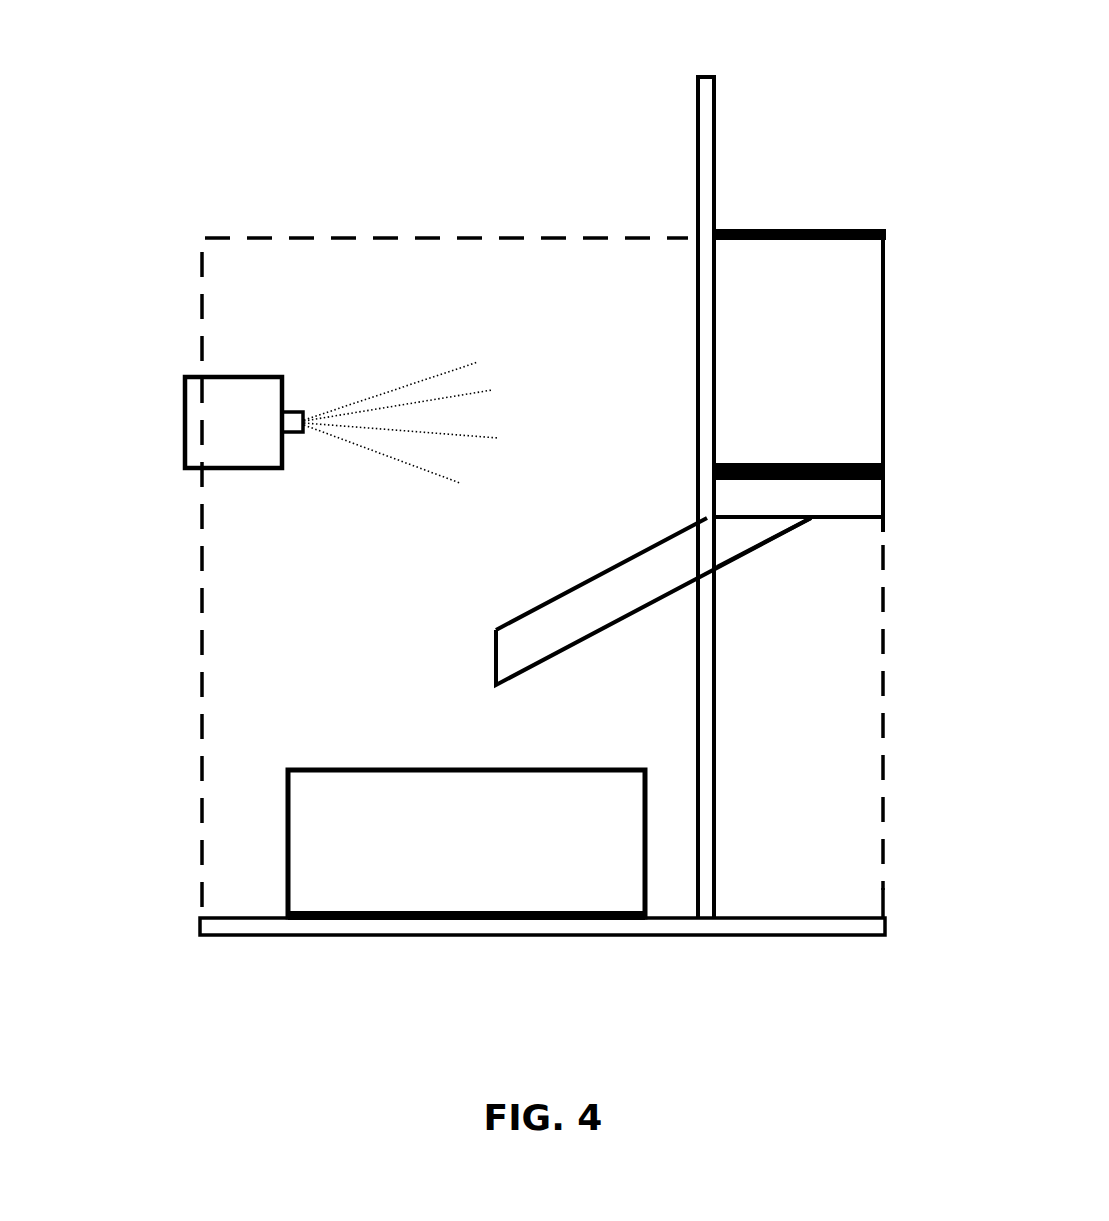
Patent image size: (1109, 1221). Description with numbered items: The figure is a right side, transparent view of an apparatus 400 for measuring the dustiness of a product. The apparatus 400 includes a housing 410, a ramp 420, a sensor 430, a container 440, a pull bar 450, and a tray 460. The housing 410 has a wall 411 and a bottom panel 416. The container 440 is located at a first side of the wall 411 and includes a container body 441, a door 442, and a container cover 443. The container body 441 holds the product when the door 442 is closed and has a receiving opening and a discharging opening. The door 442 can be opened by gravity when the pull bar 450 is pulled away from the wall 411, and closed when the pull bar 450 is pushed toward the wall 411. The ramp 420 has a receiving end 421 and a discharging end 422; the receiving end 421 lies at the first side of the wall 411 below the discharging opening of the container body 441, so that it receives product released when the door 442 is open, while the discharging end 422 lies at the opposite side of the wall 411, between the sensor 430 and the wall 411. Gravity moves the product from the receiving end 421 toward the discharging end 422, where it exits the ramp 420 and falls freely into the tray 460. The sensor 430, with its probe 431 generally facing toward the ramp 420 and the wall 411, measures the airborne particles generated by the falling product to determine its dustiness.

The apparatus 400 is at (564, 36).
The housing 410 is at (242, 188).
The wall 411 is at (702, 193).
The bottom panel 416 is at (427, 933).
The ramp 420 is at (625, 535).
The receiving end 421 is at (808, 560).
The discharging end 422 is at (518, 605).
The sensor 430 is at (285, 380).
The probe 431 is at (303, 413).
The container 440 is at (846, 325).
The container body 441 is at (822, 322).
The door 442 is at (885, 463).
The container cover 443 is at (827, 228).
The pull bar 450 is at (865, 500).
The tray 460 is at (438, 847).